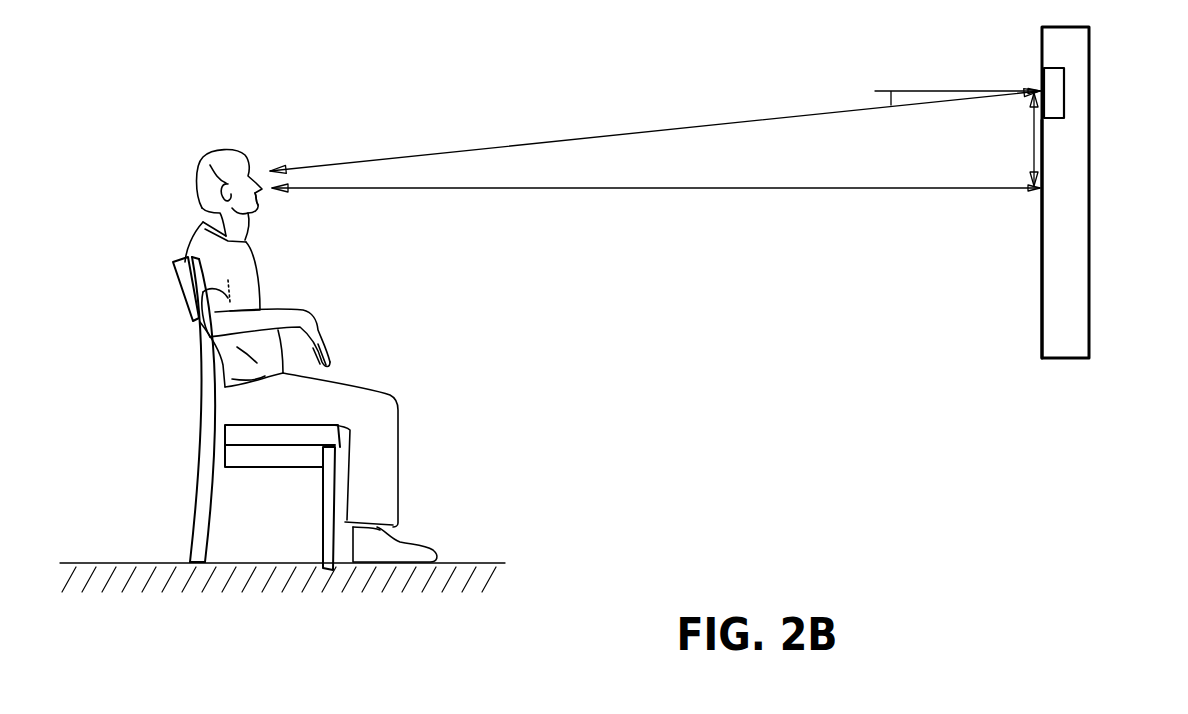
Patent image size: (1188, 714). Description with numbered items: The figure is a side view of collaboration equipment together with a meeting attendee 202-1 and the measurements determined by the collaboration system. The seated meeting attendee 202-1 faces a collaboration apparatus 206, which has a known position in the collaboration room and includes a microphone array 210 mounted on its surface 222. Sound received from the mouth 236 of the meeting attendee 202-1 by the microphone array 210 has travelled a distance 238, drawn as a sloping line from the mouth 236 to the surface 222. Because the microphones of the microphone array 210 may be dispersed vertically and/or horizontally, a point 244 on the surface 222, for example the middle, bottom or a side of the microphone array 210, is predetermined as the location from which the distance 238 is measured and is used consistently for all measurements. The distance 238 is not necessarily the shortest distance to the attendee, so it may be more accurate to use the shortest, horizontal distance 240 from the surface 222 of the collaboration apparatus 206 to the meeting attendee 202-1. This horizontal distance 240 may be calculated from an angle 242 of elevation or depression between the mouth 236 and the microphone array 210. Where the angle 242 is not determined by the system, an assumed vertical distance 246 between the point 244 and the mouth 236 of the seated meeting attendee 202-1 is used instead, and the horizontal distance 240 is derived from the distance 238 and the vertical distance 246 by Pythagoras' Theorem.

The meeting attendee 202-1 is at (207, 176).
The collaboration apparatus 206 is at (1090, 132).
The microphone array 210 is at (1054, 68).
The surface 222 is at (1042, 275).
The mouth 236 is at (258, 205).
The distance 238 is at (460, 151).
The shortest, horizontal distance 240 is at (460, 188).
The angle of elevation or depression 242 is at (875, 93).
The point 244 is at (1040, 91).
The vertical distance 246 is at (1034, 144).